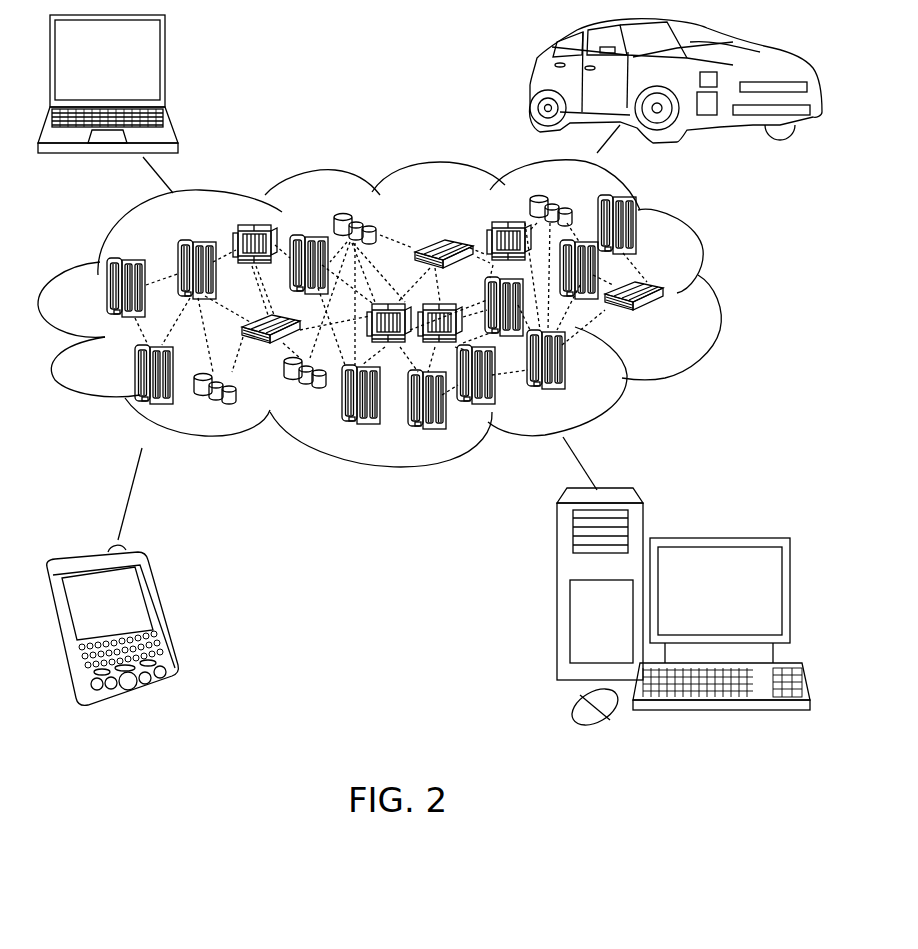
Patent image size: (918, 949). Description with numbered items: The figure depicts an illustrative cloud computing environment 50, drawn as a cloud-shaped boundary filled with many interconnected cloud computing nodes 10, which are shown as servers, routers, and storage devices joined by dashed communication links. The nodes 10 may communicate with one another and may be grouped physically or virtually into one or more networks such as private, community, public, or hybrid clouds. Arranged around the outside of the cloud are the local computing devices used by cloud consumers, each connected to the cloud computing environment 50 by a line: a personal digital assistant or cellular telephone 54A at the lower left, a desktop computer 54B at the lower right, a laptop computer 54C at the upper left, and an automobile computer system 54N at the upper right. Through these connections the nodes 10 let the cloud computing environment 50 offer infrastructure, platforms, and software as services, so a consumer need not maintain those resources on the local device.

The cloud computing nodes 10 is at (690, 337).
The cloud computing environment 50 is at (720, 297).
The personal digital assistant or cellular telephone 54A is at (160, 617).
The desktop computer 54B is at (737, 537).
The laptop computer 54C is at (167, 62).
The automobile computer system 54N is at (532, 80).